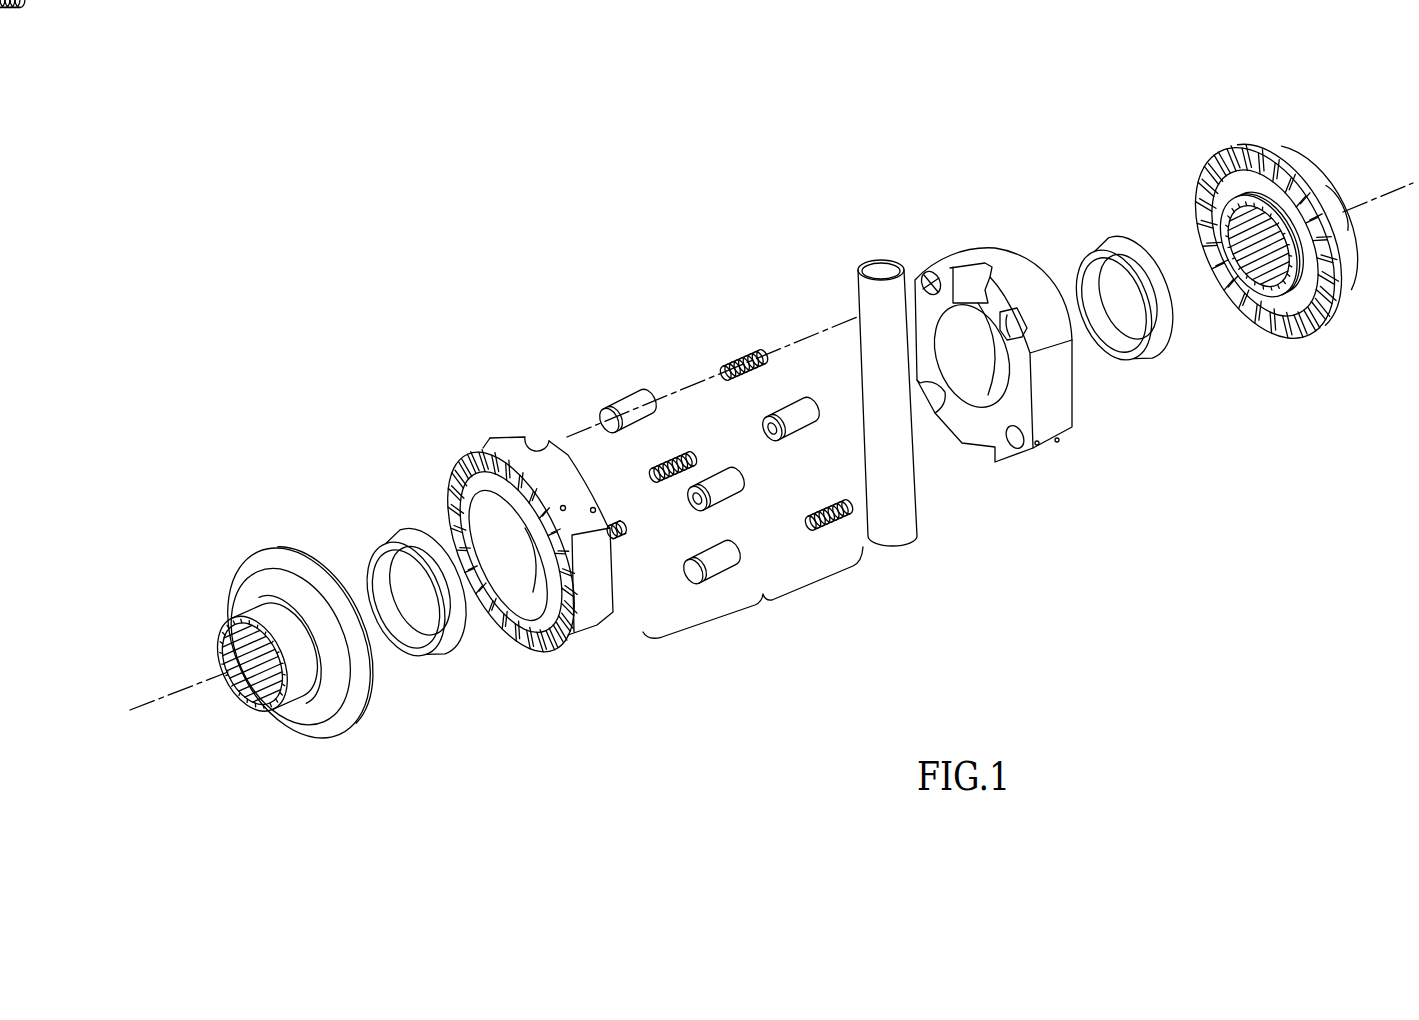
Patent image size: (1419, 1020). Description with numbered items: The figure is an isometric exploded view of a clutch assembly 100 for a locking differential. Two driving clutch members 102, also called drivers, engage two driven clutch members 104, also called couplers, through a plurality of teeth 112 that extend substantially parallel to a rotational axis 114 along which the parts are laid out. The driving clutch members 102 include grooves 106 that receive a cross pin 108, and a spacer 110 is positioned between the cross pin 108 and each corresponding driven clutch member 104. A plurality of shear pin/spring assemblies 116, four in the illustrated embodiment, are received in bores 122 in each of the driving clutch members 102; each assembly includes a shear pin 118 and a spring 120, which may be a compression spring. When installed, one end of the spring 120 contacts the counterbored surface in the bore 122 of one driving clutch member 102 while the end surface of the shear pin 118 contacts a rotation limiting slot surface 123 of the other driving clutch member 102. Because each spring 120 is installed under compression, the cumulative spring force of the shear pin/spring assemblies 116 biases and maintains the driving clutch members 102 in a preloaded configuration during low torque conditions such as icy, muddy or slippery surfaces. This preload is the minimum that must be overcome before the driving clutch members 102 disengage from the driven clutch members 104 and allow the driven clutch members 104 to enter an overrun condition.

The clutch assembly 100 is at (635, 197).
The driving clutch members 102 is at (500, 440).
The driven clutch members 104 is at (258, 558).
The grooves 106 is at (545, 450).
The cross pin 108 is at (857, 297).
The spacer 110 is at (407, 540).
The teeth 112 is at (363, 708).
The rotational axis 114 is at (192, 686).
The shear pin/spring assemblies 116 is at (753, 595).
The shear pins 118 is at (622, 393).
The springs 120 is at (738, 375).
The bores 122 is at (925, 278).
The rotation limiting slot surface 123 is at (1013, 323).